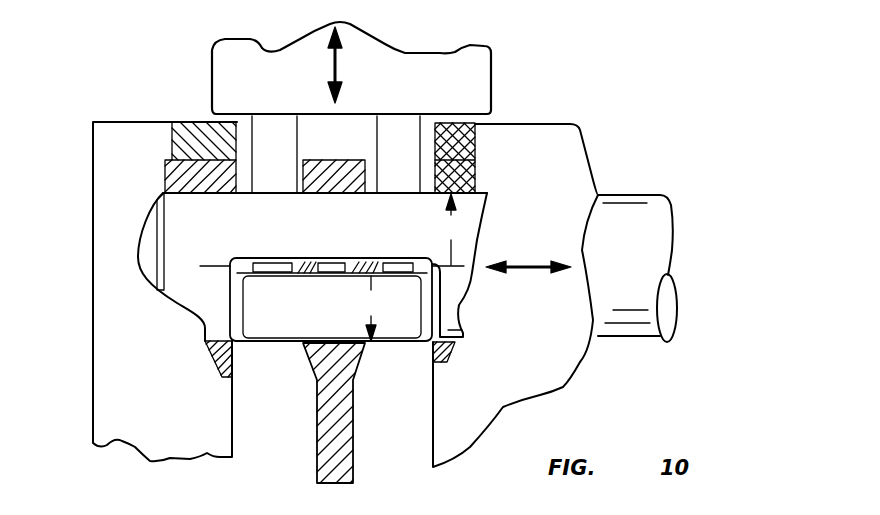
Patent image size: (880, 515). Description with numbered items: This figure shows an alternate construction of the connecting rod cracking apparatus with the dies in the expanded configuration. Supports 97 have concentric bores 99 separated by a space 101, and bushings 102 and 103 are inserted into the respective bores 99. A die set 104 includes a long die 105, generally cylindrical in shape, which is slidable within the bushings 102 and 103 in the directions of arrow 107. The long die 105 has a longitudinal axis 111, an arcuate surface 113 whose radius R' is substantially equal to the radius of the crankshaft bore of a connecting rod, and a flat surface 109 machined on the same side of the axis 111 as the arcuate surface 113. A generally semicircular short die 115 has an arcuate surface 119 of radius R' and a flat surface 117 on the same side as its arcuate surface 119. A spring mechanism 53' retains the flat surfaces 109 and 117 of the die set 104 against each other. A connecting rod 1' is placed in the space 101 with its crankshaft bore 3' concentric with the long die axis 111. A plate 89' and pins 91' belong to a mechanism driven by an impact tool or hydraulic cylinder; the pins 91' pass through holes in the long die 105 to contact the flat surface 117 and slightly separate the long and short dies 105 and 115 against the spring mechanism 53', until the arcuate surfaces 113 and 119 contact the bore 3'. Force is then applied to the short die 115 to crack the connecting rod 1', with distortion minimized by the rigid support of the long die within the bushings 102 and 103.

The connecting rod 1' is at (303, 421).
The crankshaft bore 3' is at (325, 210).
The spring mechanism 53' is at (331, 299).
The plate 89' is at (353, 61).
The pins 91' is at (338, 139).
The supports 97 is at (560, 380).
The concentric bores 99 is at (173, 165).
The space 101 is at (407, 452).
The bushing 102 is at (477, 170).
The bushing 103 is at (160, 165).
The die set 104 is at (635, 352).
The long die 105 is at (690, 211).
The arrow 107 is at (520, 263).
The flat surface 109 is at (360, 284).
The longitudinal axis 111 is at (217, 265).
The arcuate surface 113 is at (282, 190).
The short die 115 is at (291, 356).
The flat surface 117 is at (300, 258).
The arcuate surface 119 is at (413, 347).
The radius R' is at (414, 267).